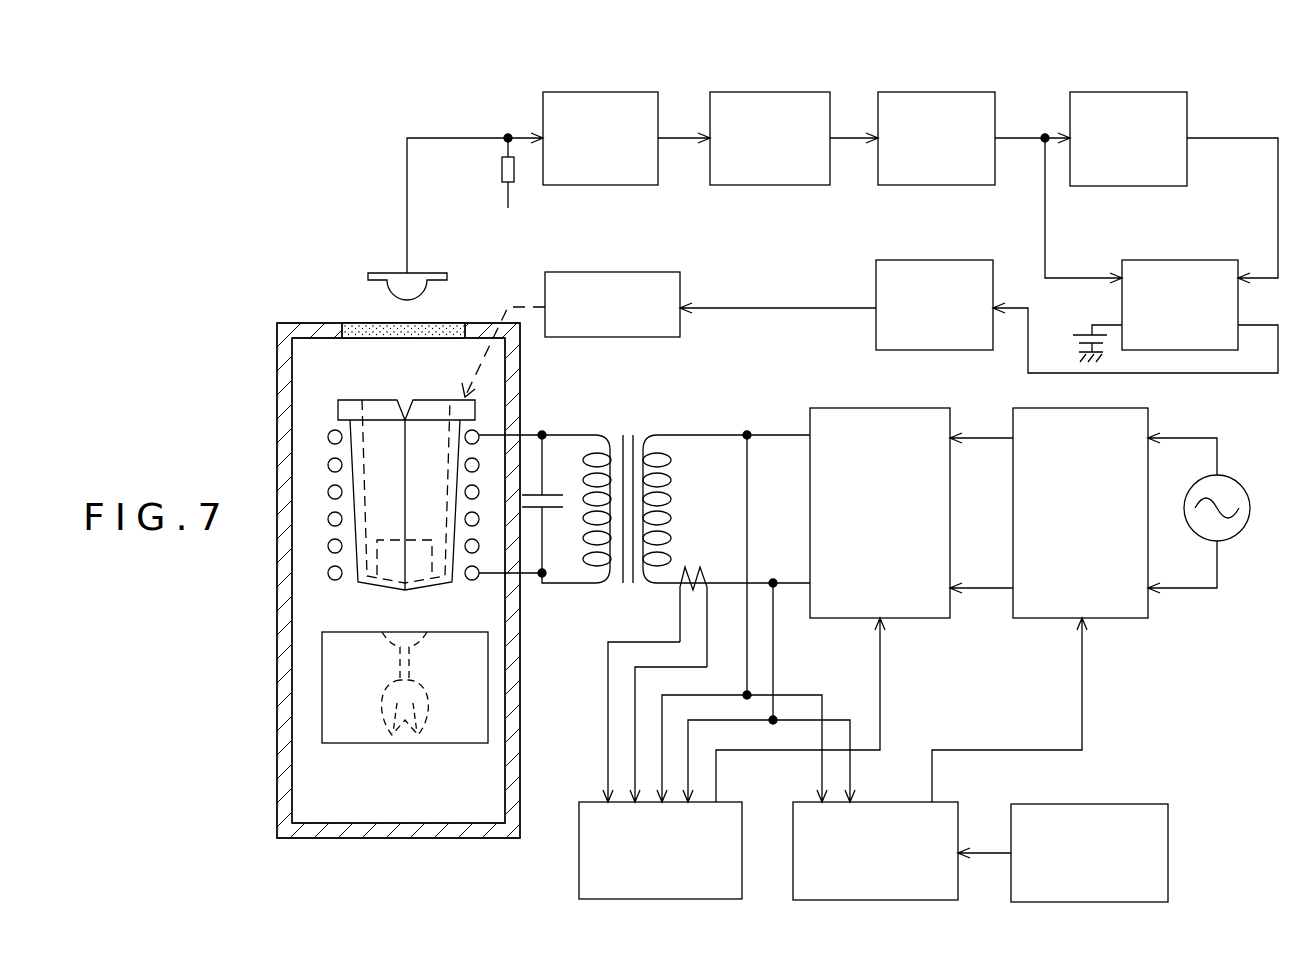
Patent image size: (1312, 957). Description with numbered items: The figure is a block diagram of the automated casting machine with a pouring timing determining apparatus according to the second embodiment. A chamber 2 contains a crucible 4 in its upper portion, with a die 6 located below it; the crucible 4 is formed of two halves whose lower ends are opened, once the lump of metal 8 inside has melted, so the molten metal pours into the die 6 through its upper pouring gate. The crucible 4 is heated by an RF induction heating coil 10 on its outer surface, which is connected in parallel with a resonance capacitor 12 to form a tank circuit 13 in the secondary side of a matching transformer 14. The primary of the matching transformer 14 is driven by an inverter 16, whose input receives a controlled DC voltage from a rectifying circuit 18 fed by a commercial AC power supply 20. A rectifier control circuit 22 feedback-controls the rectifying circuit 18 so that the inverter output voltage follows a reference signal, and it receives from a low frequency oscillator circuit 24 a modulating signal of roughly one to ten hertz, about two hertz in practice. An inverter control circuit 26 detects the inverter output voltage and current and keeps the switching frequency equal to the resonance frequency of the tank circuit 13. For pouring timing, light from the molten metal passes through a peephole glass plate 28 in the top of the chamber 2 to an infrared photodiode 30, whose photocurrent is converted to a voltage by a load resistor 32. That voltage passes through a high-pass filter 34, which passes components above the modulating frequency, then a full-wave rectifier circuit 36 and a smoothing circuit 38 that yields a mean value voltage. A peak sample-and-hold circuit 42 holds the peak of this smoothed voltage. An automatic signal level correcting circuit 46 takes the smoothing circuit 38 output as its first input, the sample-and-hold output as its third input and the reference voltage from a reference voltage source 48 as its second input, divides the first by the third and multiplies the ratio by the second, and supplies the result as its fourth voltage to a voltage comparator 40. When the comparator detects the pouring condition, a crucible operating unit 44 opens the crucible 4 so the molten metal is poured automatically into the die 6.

The chamber 2 is at (278, 323).
The crucible 4 is at (383, 400).
The die 6 is at (363, 747).
The lump of metal 8 is at (433, 560).
The RF induction heating coil 10 is at (327, 437).
The resonance capacitor 12 is at (553, 492).
The tank circuit 13 is at (490, 560).
The matching transformer 14 is at (636, 440).
The inverter 16 is at (875, 408).
The rectifying circuit 18 is at (1113, 620).
The commercial AC power supply 20 is at (1238, 478).
The rectifier control circuit 22 is at (793, 848).
The low frequency oscillator circuit 24 is at (1168, 873).
The inverter control circuit 26 is at (579, 870).
The peephole glass plate 28 is at (370, 323).
The infrared photodiode 30 is at (410, 280).
The load resistor 32 is at (500, 170).
The high-pass filter 34 is at (638, 100).
The full-wave rectifier circuit 36 is at (805, 100).
The smoothing circuit 38 is at (968, 100).
The voltage comparator 40 is at (975, 275).
The peak sample-and-hold circuit 42 is at (1168, 100).
The crucible operating unit 44 is at (638, 275).
The automatic signal level correcting circuit 46 is at (1218, 265).
The reference voltage source 48 is at (1085, 333).